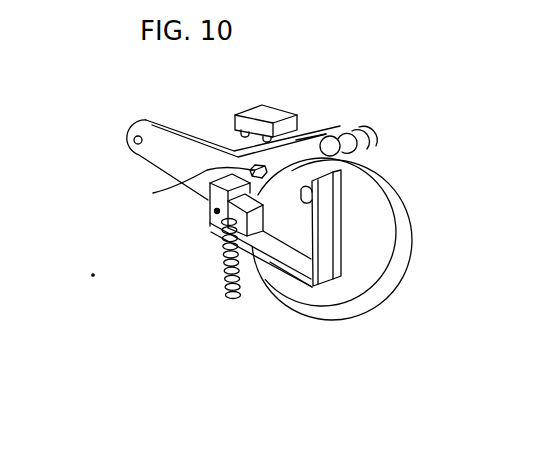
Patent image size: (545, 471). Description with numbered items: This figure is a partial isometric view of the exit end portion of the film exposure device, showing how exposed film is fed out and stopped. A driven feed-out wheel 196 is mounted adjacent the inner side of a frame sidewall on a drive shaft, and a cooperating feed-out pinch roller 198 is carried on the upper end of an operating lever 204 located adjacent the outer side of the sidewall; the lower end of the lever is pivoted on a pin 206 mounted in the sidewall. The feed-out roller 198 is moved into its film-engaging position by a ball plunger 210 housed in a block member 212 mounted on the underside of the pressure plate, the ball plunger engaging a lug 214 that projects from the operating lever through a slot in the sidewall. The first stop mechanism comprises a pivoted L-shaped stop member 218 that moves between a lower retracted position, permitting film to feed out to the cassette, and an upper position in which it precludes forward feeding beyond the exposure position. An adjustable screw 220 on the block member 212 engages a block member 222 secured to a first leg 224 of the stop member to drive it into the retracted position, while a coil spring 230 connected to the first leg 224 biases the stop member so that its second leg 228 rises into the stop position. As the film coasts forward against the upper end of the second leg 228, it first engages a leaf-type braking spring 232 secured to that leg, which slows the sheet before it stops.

The feed-out wheel 196 is at (399, 221).
The feed-out pinch roller 198 is at (357, 124).
The operating lever 204 is at (153, 162).
The pin 206 is at (130, 143).
The ball plunger 210 is at (298, 132).
The block member 212 is at (266, 106).
The lug 214 is at (226, 172).
The L-shaped stop member 218 is at (290, 279).
The adjustable screw 220 is at (247, 139).
The block member 222 is at (205, 206).
The first leg 224 is at (274, 263).
The second leg 228 is at (341, 257).
The coil spring 230 is at (224, 275).
The leaf-type braking spring 232 is at (343, 198).